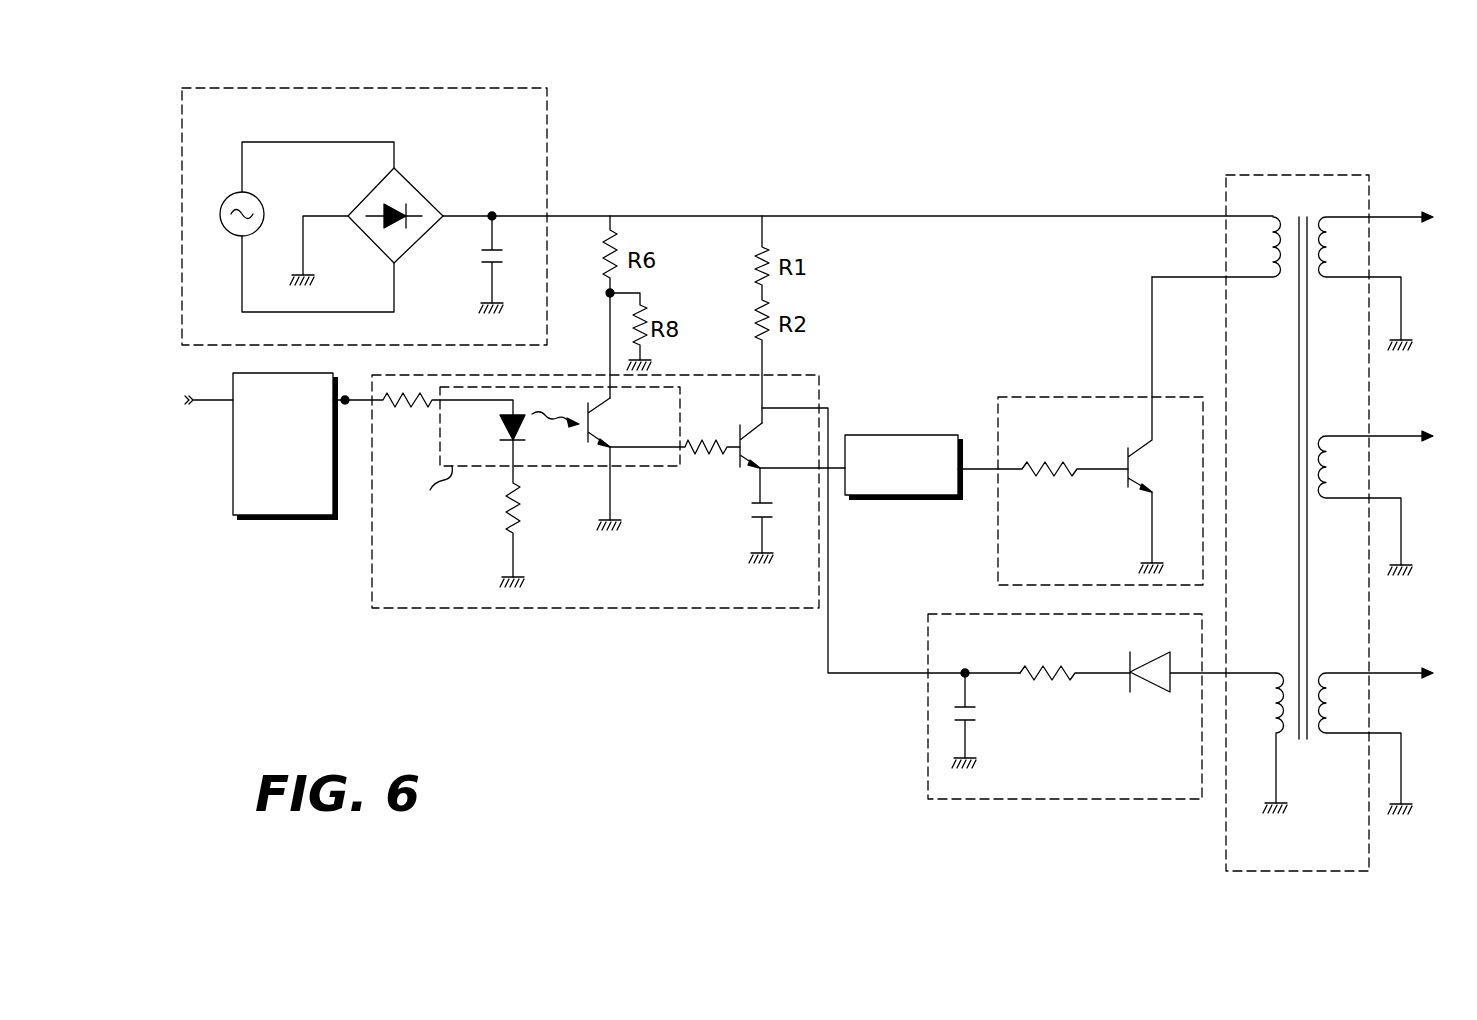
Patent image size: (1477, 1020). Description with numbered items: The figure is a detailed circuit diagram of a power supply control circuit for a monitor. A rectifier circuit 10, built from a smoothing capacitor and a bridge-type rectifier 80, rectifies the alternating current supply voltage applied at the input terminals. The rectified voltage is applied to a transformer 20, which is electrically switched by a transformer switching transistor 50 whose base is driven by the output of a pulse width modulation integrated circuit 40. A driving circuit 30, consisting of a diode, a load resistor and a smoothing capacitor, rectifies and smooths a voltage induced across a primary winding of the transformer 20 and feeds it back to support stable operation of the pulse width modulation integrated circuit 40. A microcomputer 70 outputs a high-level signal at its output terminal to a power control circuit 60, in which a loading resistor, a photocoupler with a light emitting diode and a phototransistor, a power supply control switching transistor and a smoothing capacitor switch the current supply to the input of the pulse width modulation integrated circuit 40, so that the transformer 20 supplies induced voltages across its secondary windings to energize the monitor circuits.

The rectifier circuit 10 is at (383, 88).
The bridge rectifier 80 is at (420, 192).
The transformer 20 is at (1313, 175).
The driving circuit 30 is at (951, 614).
The pulse width modulation integrated circuit 40 is at (887, 435).
The transformer switching transistor 50 is at (1044, 397).
The power control circuit 60 is at (490, 608).
The microcomputer (MICOM) 70 is at (282, 517).